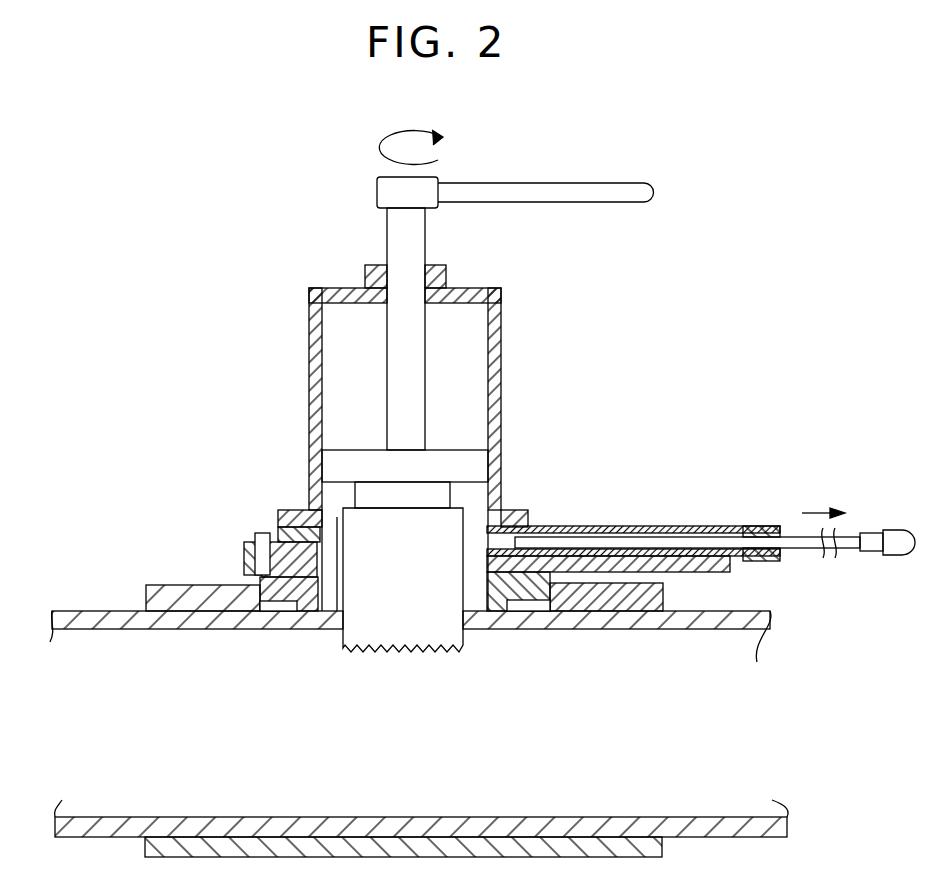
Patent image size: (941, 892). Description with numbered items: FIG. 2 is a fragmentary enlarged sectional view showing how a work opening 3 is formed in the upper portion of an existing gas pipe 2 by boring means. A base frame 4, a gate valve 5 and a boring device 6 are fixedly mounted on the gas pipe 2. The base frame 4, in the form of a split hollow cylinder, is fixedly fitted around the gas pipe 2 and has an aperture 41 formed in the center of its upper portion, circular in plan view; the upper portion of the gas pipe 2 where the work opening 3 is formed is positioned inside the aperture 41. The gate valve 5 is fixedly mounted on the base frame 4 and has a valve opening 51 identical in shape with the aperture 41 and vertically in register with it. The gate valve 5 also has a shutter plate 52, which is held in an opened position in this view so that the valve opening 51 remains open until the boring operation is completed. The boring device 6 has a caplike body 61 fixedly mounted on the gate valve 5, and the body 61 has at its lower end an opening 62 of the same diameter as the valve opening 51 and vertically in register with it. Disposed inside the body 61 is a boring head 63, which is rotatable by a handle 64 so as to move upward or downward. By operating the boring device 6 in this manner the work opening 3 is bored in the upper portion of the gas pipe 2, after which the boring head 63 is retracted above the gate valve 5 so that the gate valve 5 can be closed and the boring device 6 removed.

The gas pipe 2 is at (80, 611).
The work opening 3 is at (345, 626).
The base frame 4 is at (187, 585).
The aperture 41 is at (290, 630).
The gate valve 5 is at (746, 527).
The valve opening 51 is at (333, 533).
The shutter plate 52 is at (645, 545).
The boring device 6 is at (481, 423).
The caplike body 61 is at (501, 395).
The opening 62 is at (490, 500).
The boring head 63 is at (433, 625).
The handle 64 is at (613, 183).